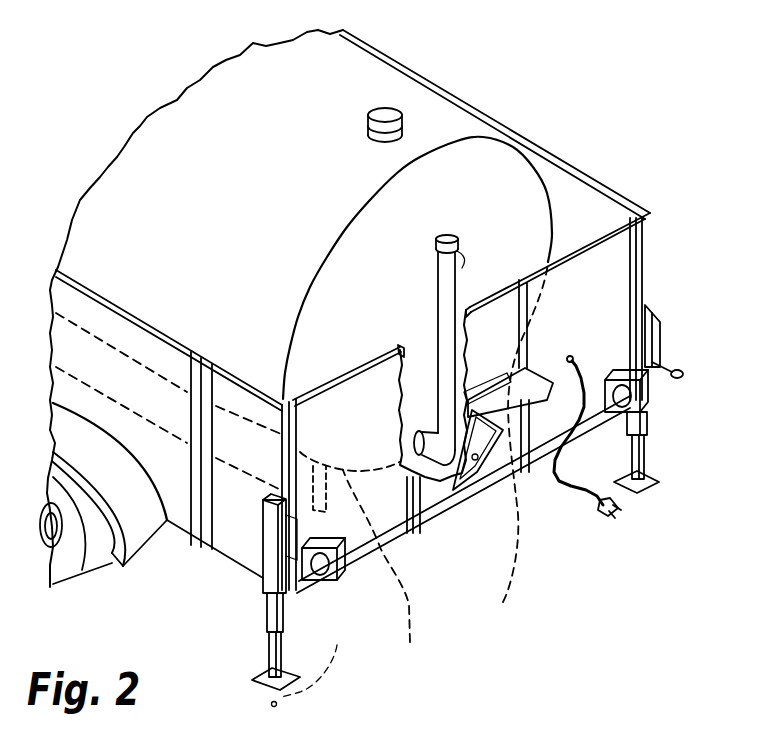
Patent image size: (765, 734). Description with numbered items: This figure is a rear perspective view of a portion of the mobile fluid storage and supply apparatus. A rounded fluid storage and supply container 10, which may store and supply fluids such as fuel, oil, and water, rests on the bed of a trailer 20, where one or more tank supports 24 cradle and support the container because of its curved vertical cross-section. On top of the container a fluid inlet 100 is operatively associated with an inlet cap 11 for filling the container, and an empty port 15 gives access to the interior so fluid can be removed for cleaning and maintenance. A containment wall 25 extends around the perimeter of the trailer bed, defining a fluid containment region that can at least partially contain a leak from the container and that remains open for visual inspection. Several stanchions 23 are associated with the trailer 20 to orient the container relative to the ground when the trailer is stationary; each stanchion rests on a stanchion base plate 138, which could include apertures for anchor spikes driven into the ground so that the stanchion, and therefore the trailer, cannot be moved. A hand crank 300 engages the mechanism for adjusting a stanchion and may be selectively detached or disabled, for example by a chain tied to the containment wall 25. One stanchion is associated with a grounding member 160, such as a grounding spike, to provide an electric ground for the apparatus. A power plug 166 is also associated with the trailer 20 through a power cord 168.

The fluid storage and supply container 10 is at (246, 230).
The inlet cap 11 is at (390, 110).
The empty port 15 is at (450, 294).
The trailer 20 is at (648, 230).
The stanchion 23 is at (648, 411).
The tank support 24 is at (445, 469).
The containment wall 25 is at (253, 535).
The fluid inlet 100 is at (367, 128).
The stanchion base plate 138 is at (635, 495).
The grounding member 160 is at (320, 662).
The power plug 166 is at (603, 512).
The power cord 168 is at (568, 496).
The hand crank 300 is at (678, 370).